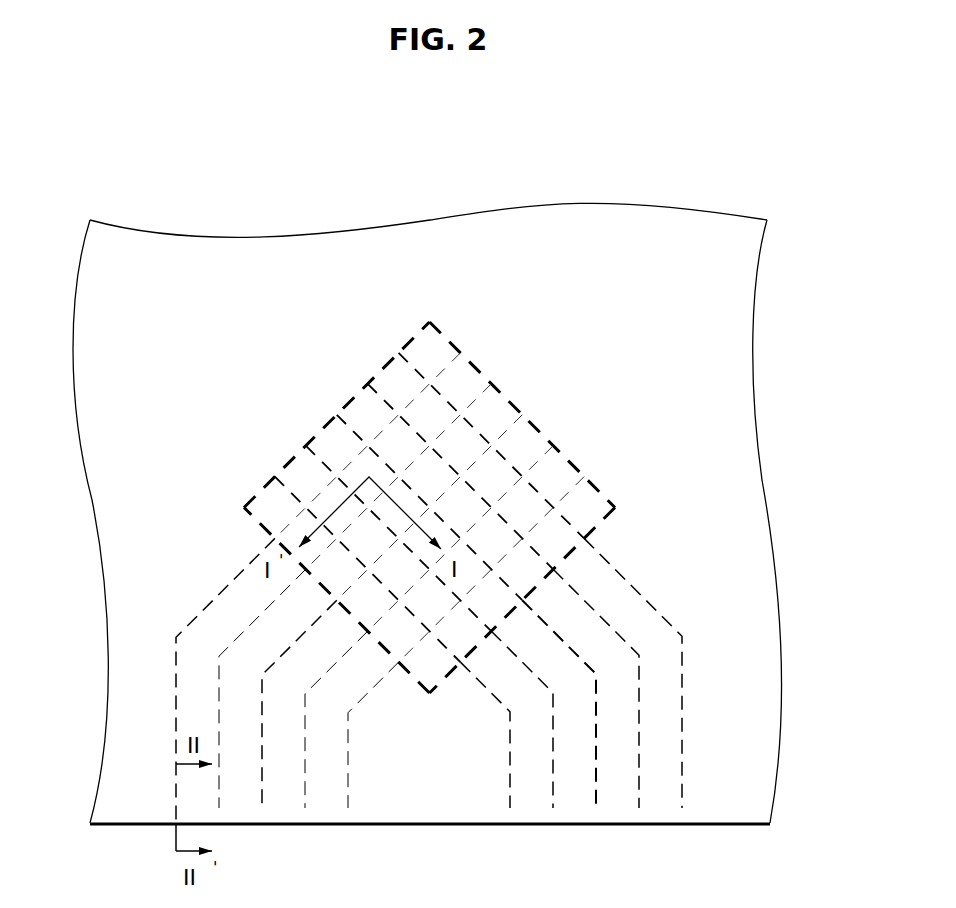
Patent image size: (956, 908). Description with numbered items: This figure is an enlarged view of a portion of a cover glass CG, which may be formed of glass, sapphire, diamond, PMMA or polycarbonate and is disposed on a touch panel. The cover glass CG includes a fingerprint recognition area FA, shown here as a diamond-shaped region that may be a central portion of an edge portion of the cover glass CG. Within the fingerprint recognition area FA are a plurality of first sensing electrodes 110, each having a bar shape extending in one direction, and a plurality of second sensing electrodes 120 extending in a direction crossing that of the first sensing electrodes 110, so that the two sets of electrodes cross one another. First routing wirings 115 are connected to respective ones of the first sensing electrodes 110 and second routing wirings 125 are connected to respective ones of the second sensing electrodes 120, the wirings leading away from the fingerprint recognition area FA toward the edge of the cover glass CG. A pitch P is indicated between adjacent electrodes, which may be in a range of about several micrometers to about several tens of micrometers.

The cover glass CG is at (175, 200).
The fingerprint recognition area FA is at (408, 340).
The pitch P is at (338, 416).
The first sensing electrodes 110 is at (290, 527).
The first routing wirings 115 is at (176, 690).
The second sensing electrodes 120 is at (575, 526).
The second routing wirings 125 is at (682, 730).